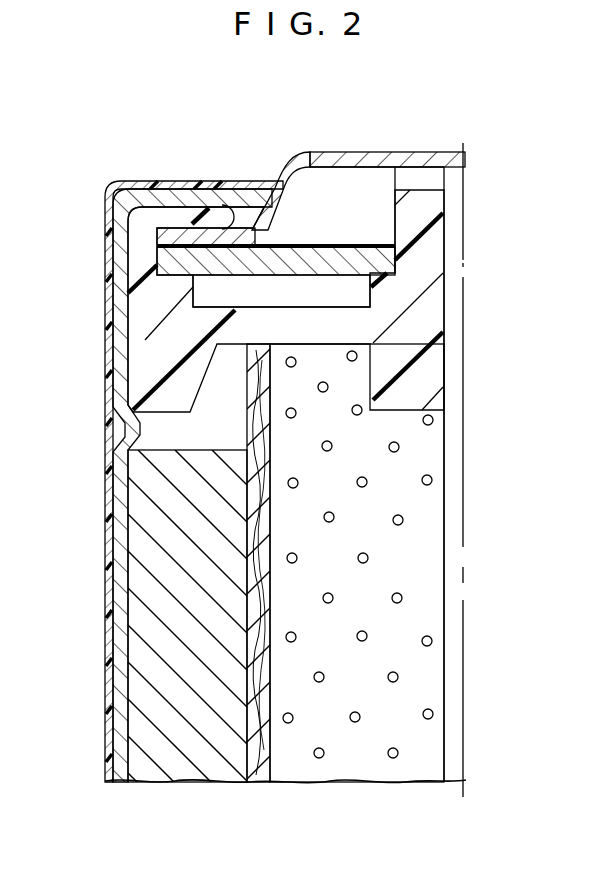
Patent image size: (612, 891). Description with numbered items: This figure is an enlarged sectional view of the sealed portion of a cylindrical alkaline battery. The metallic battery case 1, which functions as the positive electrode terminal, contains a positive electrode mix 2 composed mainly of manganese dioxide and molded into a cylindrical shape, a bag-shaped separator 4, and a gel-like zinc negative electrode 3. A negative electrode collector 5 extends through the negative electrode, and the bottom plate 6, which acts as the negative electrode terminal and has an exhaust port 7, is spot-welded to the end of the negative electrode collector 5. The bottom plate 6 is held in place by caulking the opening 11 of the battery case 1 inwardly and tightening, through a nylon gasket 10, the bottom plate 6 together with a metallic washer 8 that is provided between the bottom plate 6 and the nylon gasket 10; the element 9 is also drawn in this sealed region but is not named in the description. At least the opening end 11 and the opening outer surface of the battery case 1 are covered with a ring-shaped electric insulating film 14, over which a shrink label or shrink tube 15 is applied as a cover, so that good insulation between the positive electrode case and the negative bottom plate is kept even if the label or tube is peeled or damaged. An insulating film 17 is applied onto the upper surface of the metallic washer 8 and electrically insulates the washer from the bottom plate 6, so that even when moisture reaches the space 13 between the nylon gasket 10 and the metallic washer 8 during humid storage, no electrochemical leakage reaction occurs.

The battery case 1 is at (118, 718).
The positive electrode mix 2 is at (135, 655).
The gel-like zinc negative electrode 3 is at (418, 623).
The bag-shaped separator 4 is at (262, 770).
The negative electrode collector 5 is at (452, 547).
The bottom plate 6 is at (323, 151).
The exhaust port 7 is at (274, 218).
The metallic washer 8 is at (235, 265).
The upper plate (cover flange) 9 is at (265, 234).
The nylon gasket 10 is at (157, 342).
The opening 11 is at (132, 200).
The space 13 is at (217, 287).
The electric insulating film 14 is at (158, 187).
The shrink label or shrink tube 15 is at (108, 531).
The insulating film 17 is at (156, 247).